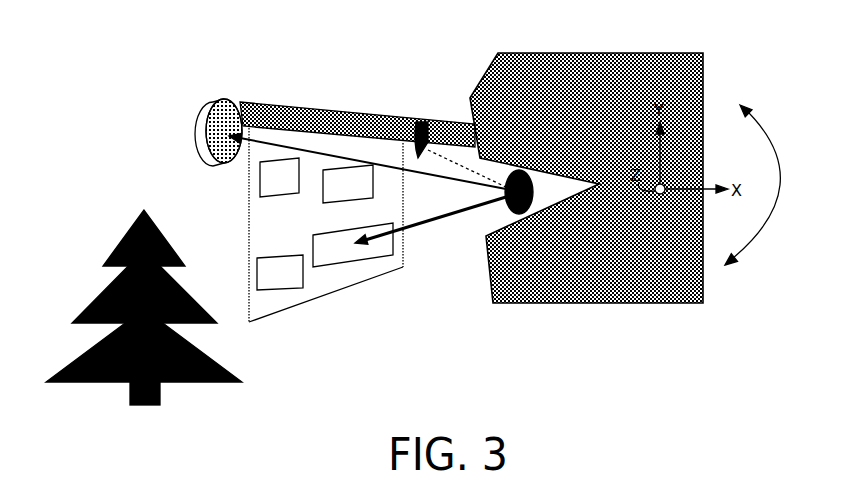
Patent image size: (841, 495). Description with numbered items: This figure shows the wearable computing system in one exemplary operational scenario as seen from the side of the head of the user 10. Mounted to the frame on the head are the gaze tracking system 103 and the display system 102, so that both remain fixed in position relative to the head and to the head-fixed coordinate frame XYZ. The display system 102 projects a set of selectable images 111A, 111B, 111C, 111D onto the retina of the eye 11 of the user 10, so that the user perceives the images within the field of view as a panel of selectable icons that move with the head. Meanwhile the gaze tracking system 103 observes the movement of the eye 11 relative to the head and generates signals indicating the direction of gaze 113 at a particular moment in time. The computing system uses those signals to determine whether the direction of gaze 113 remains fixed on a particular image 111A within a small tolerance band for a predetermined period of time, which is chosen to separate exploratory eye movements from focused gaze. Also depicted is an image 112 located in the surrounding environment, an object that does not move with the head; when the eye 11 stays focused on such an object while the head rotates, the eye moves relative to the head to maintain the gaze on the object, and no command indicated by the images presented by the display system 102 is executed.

The user 10 is at (619, 53).
The eye 11 is at (505, 207).
The display system 102 is at (422, 124).
The gaze tracking system 103 is at (202, 120).
The selectable image 111A is at (342, 264).
The selectable image 111B is at (278, 291).
The selectable image 111C is at (260, 176).
The selectable image 111D is at (320, 198).
The image located in the surrounding environment 112 is at (122, 238).
The direction of gaze 113 is at (424, 225).